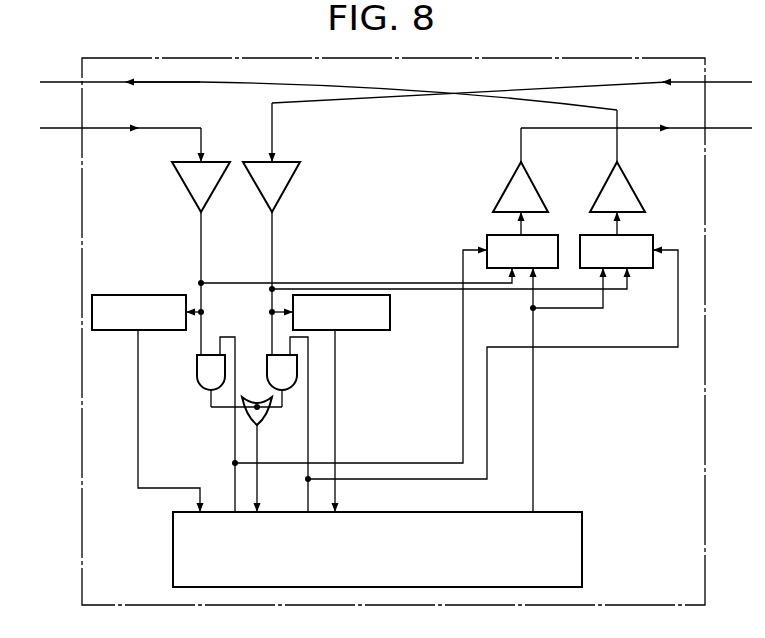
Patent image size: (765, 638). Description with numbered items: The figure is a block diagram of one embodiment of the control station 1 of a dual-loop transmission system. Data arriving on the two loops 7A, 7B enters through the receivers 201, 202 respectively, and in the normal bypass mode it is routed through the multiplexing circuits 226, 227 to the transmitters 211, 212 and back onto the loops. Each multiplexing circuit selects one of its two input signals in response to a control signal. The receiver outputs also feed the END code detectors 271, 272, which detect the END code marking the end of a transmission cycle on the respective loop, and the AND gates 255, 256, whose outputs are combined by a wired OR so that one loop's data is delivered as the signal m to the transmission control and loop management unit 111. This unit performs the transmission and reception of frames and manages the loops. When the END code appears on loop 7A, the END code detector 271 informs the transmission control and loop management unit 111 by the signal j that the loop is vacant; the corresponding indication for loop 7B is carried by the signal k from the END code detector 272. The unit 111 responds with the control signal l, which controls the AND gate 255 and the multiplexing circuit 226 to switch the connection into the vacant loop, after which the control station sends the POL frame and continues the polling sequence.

The control station 1 is at (705, 438).
The loop 7A is at (395, 117).
The loop 7B is at (395, 83).
The receiver 201 is at (182, 179).
The receiver 202 is at (290, 181).
The transmitter 211 is at (508, 190).
The transmitter 212 is at (626, 195).
The multiplexing circuit 226 is at (492, 234).
The multiplexing circuit 227 is at (670, 232).
The AND gate 255 is at (197, 390).
The AND gate 256 is at (267, 365).
The END code detector 271 is at (152, 295).
The END code detector 272 is at (390, 312).
The transmission control and loop management unit 111 is at (582, 540).
The signal j is at (138, 415).
The signal k is at (335, 434).
The control signal l is at (235, 437).
The signal m is at (257, 435).